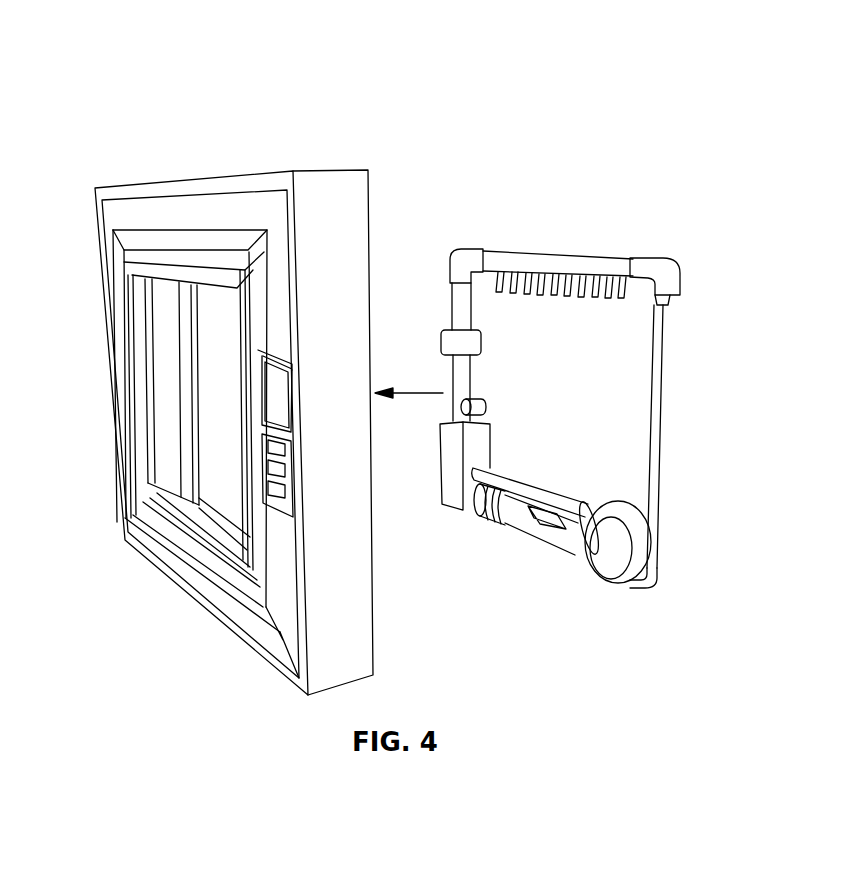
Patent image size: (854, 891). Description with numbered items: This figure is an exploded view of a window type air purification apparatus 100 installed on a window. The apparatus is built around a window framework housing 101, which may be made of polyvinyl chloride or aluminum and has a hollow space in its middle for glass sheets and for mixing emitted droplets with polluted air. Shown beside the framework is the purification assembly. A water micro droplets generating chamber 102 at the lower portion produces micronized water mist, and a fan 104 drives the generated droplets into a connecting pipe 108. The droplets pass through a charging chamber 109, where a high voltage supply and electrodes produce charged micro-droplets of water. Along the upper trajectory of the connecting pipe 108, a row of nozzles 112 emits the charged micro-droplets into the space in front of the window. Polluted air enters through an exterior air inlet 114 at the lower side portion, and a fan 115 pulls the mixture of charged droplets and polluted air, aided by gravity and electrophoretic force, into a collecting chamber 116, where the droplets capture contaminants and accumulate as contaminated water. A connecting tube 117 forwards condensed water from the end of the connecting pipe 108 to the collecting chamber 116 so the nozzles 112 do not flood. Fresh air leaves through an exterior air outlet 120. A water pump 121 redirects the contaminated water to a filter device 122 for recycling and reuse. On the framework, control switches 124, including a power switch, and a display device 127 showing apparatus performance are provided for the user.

The air purification apparatus 100 is at (150, 95).
The housing 101 is at (182, 190).
The water micro droplets generating chamber 102 is at (480, 440).
The fan 104 is at (486, 403).
The connecting pipe 108 is at (565, 262).
The charging chamber 109 is at (442, 340).
The nozzles 112 is at (588, 297).
The exterior air inlet 114 is at (548, 482).
The fan 115 is at (637, 537).
The collecting chamber 116 is at (563, 543).
The connecting tube 117 is at (662, 395).
The exterior air outlet 120 is at (605, 503).
The water pump 121 is at (522, 523).
The filter device 122 is at (482, 508).
The control switches 124 is at (262, 467).
The display device 127 is at (272, 390).